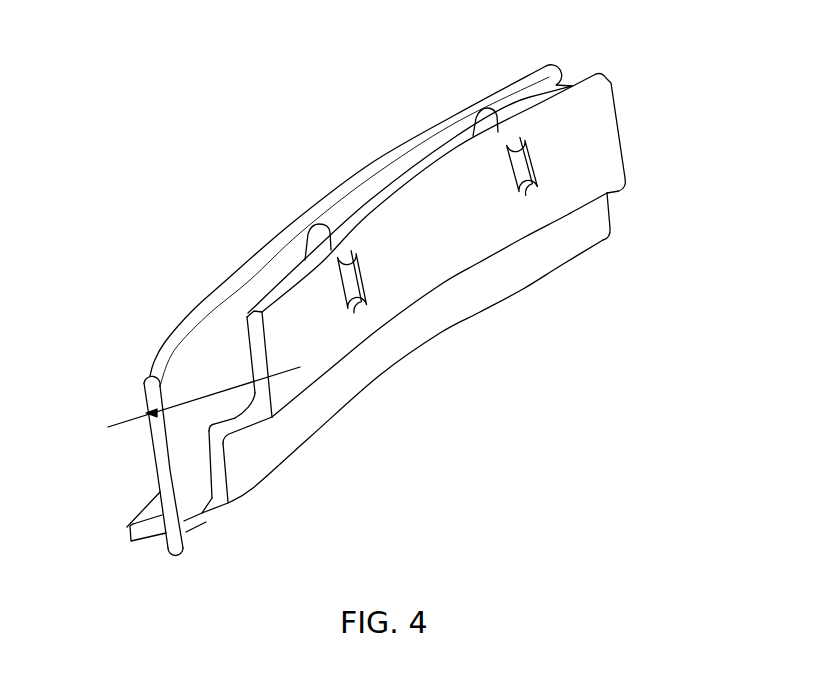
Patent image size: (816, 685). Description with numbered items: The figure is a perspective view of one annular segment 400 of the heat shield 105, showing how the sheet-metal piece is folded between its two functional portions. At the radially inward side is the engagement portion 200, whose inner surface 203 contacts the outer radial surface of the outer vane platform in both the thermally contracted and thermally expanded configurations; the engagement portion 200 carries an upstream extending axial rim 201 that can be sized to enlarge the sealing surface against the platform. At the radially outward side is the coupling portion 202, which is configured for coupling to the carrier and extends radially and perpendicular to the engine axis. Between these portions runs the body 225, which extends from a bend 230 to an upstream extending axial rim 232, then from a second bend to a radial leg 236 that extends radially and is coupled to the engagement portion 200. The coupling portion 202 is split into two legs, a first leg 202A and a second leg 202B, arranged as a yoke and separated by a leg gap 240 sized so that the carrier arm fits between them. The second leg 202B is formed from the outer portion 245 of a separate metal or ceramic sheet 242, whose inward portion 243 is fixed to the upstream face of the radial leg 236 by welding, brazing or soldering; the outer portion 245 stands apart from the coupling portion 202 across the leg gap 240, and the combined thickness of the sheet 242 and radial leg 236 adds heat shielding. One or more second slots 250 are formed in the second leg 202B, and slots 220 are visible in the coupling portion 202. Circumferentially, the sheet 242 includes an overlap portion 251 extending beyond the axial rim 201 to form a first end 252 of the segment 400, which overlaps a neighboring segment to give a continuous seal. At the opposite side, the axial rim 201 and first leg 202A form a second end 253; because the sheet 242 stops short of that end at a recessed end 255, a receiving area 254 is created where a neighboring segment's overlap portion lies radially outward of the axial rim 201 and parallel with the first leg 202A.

The segment 400 is at (222, 119).
The heat shield 105 is at (458, 334).
The engagement portion 200 is at (140, 547).
The axial rim 201 is at (132, 529).
The coupling portion 202 is at (604, 128).
The first leg 202A is at (444, 167).
The second leg 202B is at (386, 158).
The inner surface 203 is at (218, 512).
The slot holes 220 is at (540, 165).
The body 225 is at (268, 397).
The bend 230 is at (274, 419).
The axial rim 232 is at (262, 372).
The radial leg 236 is at (222, 473).
The leg gap 240 is at (207, 390).
The sheet 242 is at (226, 312).
The inward portion 243 is at (190, 549).
The outer portion 245 is at (147, 378).
The second slots 250 is at (486, 117).
The overlap portion 251 is at (143, 350).
The first end 252 is at (150, 470).
The second end 253 is at (638, 201).
The receiving area 254 is at (549, 74).
The recessed end 255 is at (575, 69).